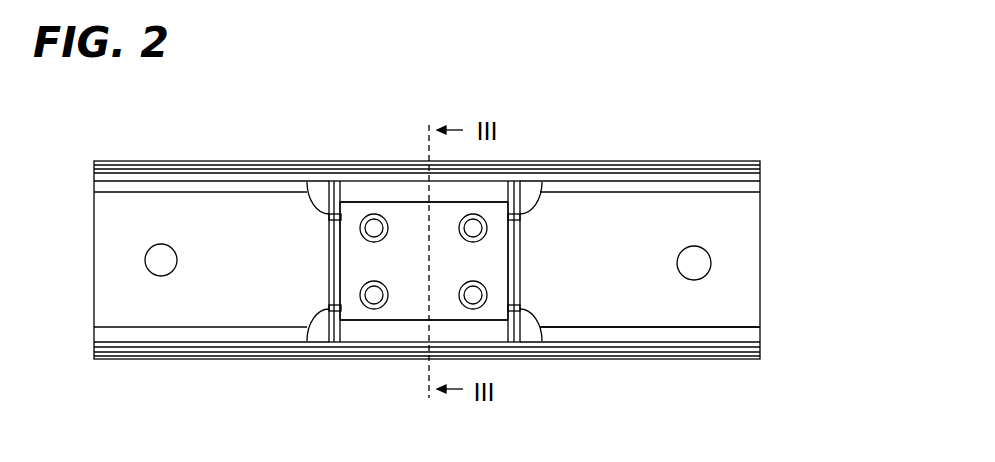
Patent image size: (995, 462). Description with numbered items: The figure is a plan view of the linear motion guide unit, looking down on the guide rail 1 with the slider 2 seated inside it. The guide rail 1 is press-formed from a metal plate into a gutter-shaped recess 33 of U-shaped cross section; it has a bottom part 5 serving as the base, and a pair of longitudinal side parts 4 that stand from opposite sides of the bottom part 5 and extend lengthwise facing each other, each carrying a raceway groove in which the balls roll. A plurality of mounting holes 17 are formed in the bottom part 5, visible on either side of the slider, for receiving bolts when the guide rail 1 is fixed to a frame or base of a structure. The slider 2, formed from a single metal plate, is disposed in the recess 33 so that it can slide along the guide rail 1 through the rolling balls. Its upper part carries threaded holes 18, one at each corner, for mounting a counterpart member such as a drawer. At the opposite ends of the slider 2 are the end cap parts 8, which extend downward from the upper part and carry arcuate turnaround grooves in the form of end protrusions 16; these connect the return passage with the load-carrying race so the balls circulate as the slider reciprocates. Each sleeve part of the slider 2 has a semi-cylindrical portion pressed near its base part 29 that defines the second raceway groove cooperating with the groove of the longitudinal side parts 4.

The guide rail 1 is at (676, 190).
The slider 2 is at (370, 203).
The longitudinal side part 4 is at (240, 172).
The bottom part 5 is at (211, 224).
The end cap part 8 is at (512, 270).
The end protrusion 16 is at (322, 190).
The mounting hole 17 is at (698, 262).
The threaded hole 18 is at (473, 295).
The base part 29 is at (390, 190).
The recess 33 is at (644, 290).